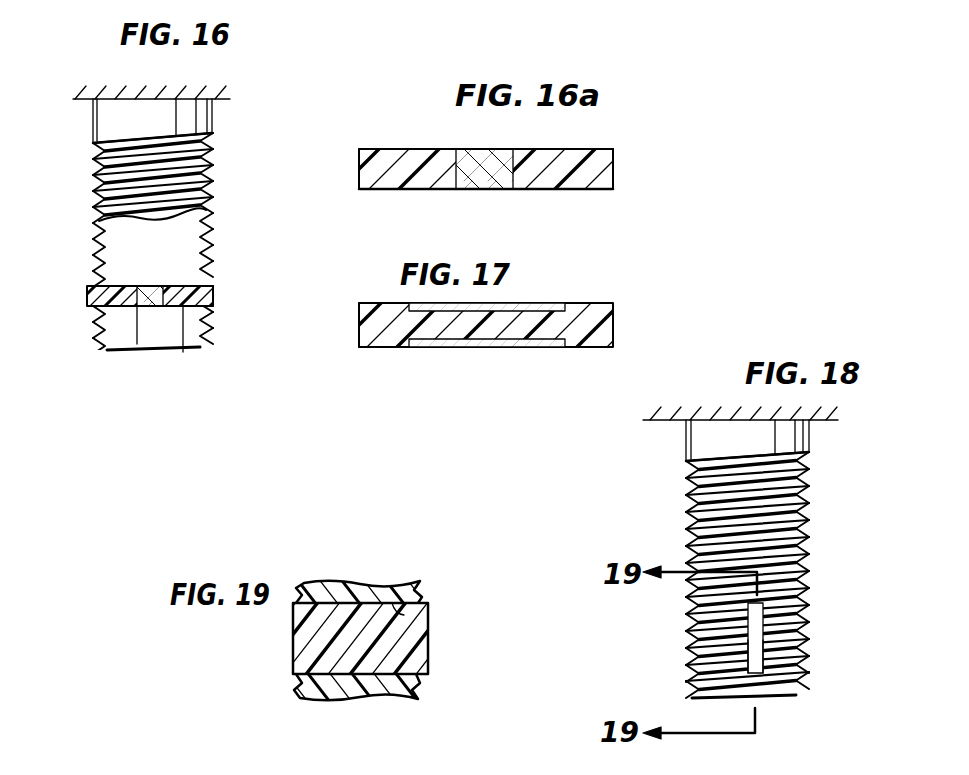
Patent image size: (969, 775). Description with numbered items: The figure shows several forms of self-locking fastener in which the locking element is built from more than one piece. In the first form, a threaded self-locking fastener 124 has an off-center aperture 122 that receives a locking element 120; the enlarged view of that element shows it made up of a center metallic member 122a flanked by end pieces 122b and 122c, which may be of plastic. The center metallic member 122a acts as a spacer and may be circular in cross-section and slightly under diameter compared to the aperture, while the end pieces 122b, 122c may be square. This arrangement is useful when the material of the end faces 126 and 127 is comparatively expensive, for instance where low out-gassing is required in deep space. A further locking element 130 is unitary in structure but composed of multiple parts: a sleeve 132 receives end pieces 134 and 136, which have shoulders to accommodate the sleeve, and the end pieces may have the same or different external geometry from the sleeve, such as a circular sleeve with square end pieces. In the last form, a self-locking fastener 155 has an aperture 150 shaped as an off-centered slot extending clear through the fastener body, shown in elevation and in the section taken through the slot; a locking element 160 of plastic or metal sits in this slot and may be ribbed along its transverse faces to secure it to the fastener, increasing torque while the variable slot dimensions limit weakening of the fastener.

In FIG. 16, the locking element 120 is at (234, 178).
In FIG. 16, the off-center aperture 122 is at (311, 327).
In FIG. 16, the center metallic member 122a is at (150, 306).
In FIG. 16A, the center metallic member 122a is at (490, 188).
In FIG. 16, the end piece 122b is at (213, 296).
In FIG. 16A, the end piece 122b is at (613, 154).
In FIG. 16, the end piece 122c is at (87, 298).
In FIG. 16A, the end piece 122c is at (428, 118).
In FIG. 16, the self-locking fastener 124 is at (186, 352).
In FIG. 16A, the self-locking fastener 124 is at (558, 146).
In FIG. 16A, the end face 126 is at (613, 182).
In FIG. 16A, the end face 127 is at (359, 178).
In FIG. 17, the locking element 130 is at (614, 321).
In FIG. 17, the sleeve 132 is at (485, 347).
In FIG. 17, the end piece 134 is at (613, 326).
In FIG. 17, the end piece 136 is at (382, 336).
In FIG. 18, the aperture 150 is at (760, 628).
In FIG. 19, the aperture 150 is at (398, 612).
In FIG. 18, the self-locking fastener 155 is at (826, 536).
In FIG. 19, the self-locking fastener 155 is at (425, 577).
In FIG. 18, the locking element 160 is at (758, 658).
In FIG. 19, the locking element 160 is at (426, 661).